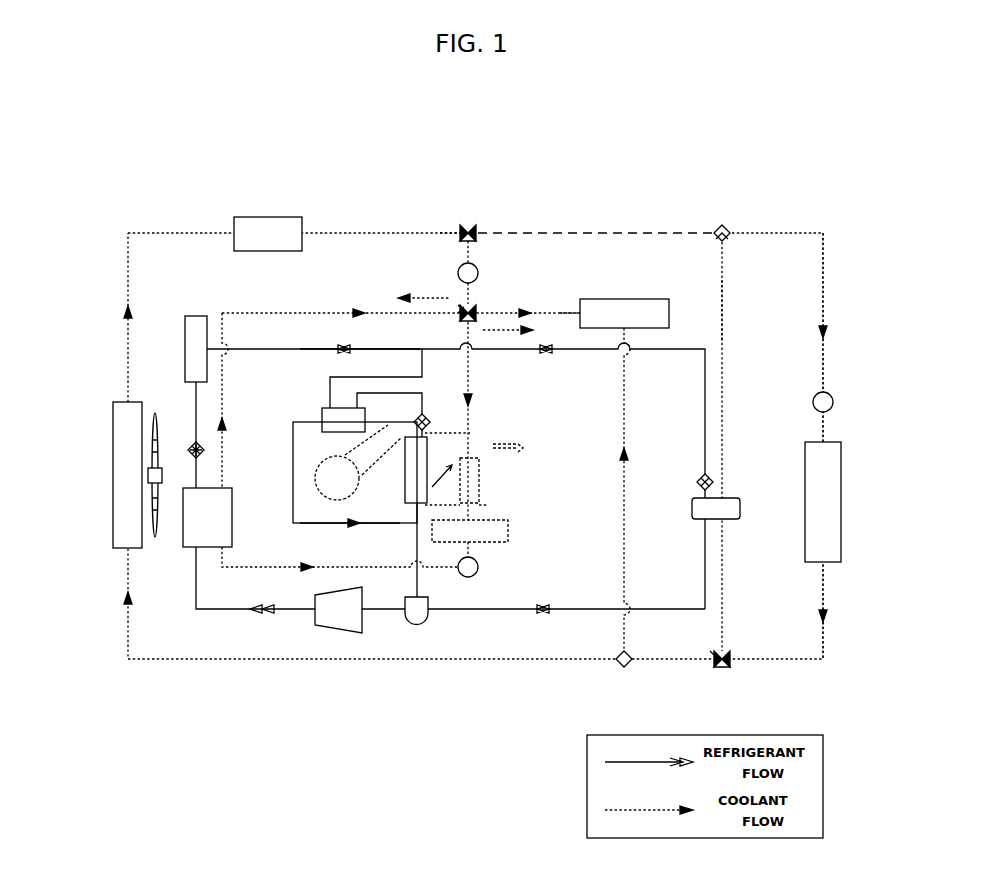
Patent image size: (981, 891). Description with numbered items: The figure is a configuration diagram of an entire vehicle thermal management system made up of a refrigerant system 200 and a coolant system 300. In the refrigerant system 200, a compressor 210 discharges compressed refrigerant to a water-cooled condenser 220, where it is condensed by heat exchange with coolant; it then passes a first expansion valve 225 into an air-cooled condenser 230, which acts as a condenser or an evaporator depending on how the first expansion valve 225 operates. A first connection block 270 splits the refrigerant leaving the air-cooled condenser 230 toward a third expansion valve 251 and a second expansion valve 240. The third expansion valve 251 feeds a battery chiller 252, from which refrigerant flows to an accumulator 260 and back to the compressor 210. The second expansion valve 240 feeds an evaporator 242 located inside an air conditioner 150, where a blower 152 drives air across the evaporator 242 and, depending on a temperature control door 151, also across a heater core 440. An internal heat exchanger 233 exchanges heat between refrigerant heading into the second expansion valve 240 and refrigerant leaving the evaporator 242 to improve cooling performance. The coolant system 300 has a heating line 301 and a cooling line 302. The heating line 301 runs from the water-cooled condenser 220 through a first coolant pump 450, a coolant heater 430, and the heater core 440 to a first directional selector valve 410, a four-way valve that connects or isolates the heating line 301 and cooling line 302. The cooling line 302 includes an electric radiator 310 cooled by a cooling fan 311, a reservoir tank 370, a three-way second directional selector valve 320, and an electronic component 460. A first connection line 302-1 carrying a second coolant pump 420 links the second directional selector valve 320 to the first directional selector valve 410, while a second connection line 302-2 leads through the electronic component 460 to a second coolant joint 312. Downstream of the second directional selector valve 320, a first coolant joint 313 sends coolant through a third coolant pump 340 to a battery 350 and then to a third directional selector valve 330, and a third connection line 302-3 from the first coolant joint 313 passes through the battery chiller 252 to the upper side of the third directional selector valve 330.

The air conditioner 150 is at (370, 445).
The temperature control door 151 is at (470, 430).
The blower 152 is at (316, 470).
The refrigerant system 200 is at (290, 340).
The compressor 210 is at (340, 635).
The water-cooled condenser 220 is at (145, 545).
The first expansion valve 225 is at (188, 448).
The air-cooled condenser 230 is at (197, 314).
The internal heat exchanger 233 is at (318, 407).
The second expansion valve 240 is at (430, 418).
The evaporator 242 is at (403, 528).
The third expansion valve 251 is at (712, 472).
The battery chiller 252 is at (748, 518).
The accumulator 260 is at (420, 628).
The first connection block 270 is at (420, 345).
The coolant system 300 is at (806, 121).
The heating line 301 is at (327, 307).
The cooling line 302 is at (662, 233).
The first connection line 302-1 is at (461, 248).
The second connection line 302-2 is at (558, 306).
The third connection line 302-3 is at (724, 301).
The electric radiator 310 is at (112, 472).
The cooling fan 311 is at (150, 500).
The second coolant joint 312 is at (625, 668).
The first coolant joint 313 is at (720, 225).
The second directional selector valve 320 is at (470, 225).
The third directional selector valve 330 is at (732, 665).
The third coolant pump 340 is at (834, 397).
The battery 350 is at (843, 500).
The reservoir tank 370 is at (266, 216).
The first directional selector valve 410 is at (478, 305).
The second coolant pump 420 is at (478, 270).
The coolant heater 430 is at (509, 532).
The heater core 440 is at (481, 480).
The first coolant pump 450 is at (479, 568).
The electronic component 460 is at (632, 298).